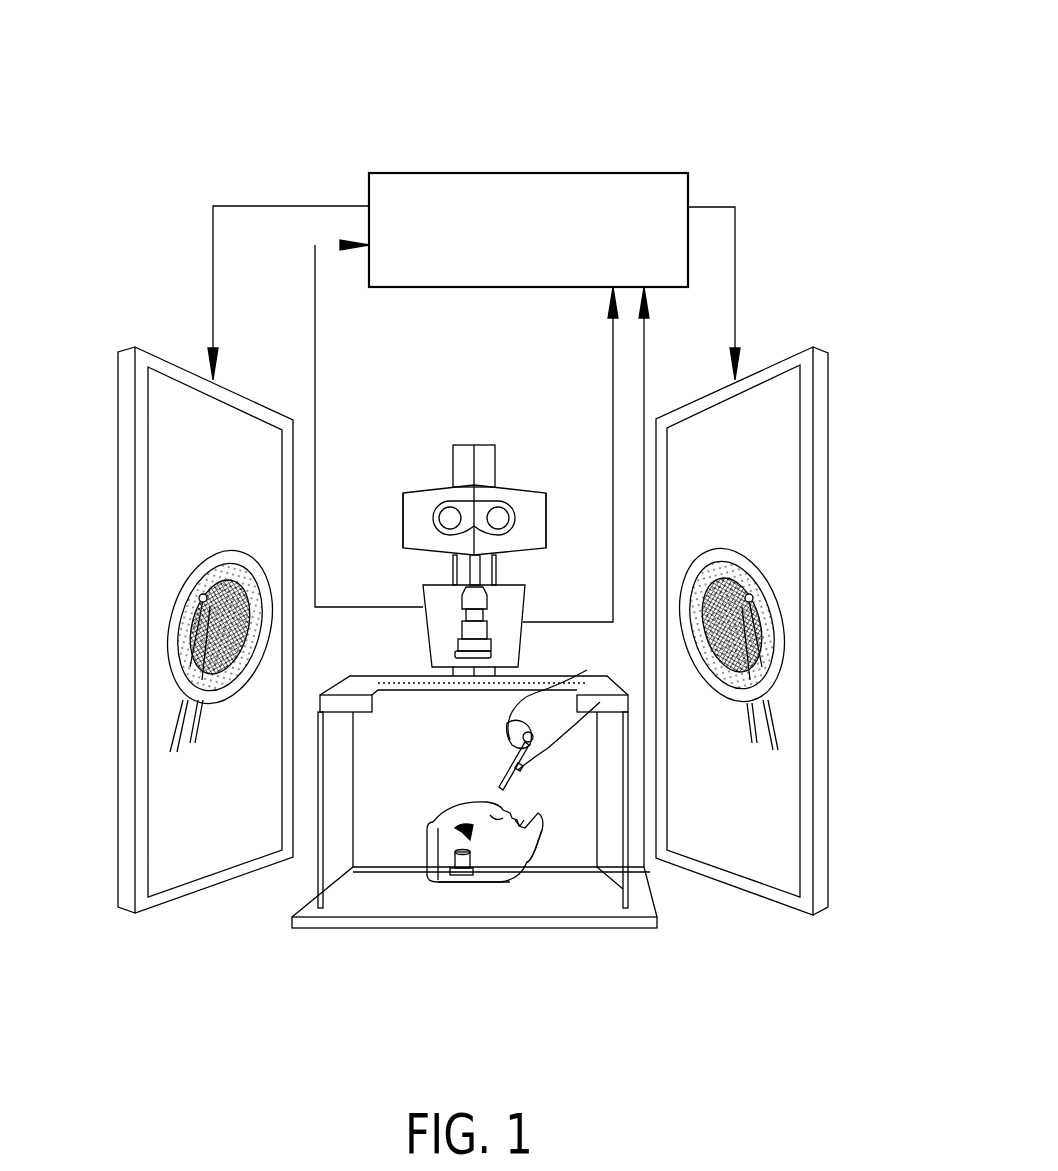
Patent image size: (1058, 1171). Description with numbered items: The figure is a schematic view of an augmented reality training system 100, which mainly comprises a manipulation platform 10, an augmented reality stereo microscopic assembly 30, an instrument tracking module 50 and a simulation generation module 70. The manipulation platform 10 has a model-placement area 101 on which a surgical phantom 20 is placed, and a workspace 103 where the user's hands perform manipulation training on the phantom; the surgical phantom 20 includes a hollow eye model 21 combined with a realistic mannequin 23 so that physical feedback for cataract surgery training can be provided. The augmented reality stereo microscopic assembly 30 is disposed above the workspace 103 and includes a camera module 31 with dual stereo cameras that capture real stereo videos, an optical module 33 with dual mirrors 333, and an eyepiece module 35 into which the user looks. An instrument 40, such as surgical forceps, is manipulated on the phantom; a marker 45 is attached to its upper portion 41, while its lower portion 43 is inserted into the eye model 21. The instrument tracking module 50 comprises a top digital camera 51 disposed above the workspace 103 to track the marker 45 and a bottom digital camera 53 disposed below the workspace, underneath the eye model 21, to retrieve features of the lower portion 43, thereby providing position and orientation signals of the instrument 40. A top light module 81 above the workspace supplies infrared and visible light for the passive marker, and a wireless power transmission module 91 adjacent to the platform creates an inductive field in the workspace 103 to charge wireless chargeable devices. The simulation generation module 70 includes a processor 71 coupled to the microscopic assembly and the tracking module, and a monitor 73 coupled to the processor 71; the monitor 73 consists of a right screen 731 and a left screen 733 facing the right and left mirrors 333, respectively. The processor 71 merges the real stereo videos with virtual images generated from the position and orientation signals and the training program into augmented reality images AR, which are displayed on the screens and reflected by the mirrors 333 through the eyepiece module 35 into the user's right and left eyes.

The augmented reality training system 100 is at (800, 65).
The simulation generation module 70 is at (150, 225).
The processor 71 is at (528, 230).
The monitor 73 is at (474, 631).
The right screen 731 is at (788, 482).
The left screen 733 is at (157, 510).
The augmented reality images AR is at (170, 636).
The augmented reality stereo microscopic assembly 30 is at (485, 405).
The optical module 33 is at (543, 542).
The mirrors 333 is at (410, 522).
The eyepiece module 35 is at (513, 503).
The camera module 31 is at (430, 595).
The instrument tracking module 50 is at (395, 632).
The top digital camera 51 is at (460, 653).
The manipulation platform 10 is at (262, 895).
The workspace 103 is at (522, 698).
The top light module 81 is at (597, 685).
The wireless power transmission module 91 is at (607, 772).
The model-placement area 101 is at (493, 887).
The surgical phantom 20 is at (412, 814).
The eye model 21 is at (433, 880).
The realistic mannequin 23 is at (527, 857).
The bottom digital camera 53 is at (457, 873).
The marker 45 is at (513, 725).
The instrument 40 is at (507, 767).
The upper portion 41 is at (512, 742).
The lower portion 43 is at (498, 787).